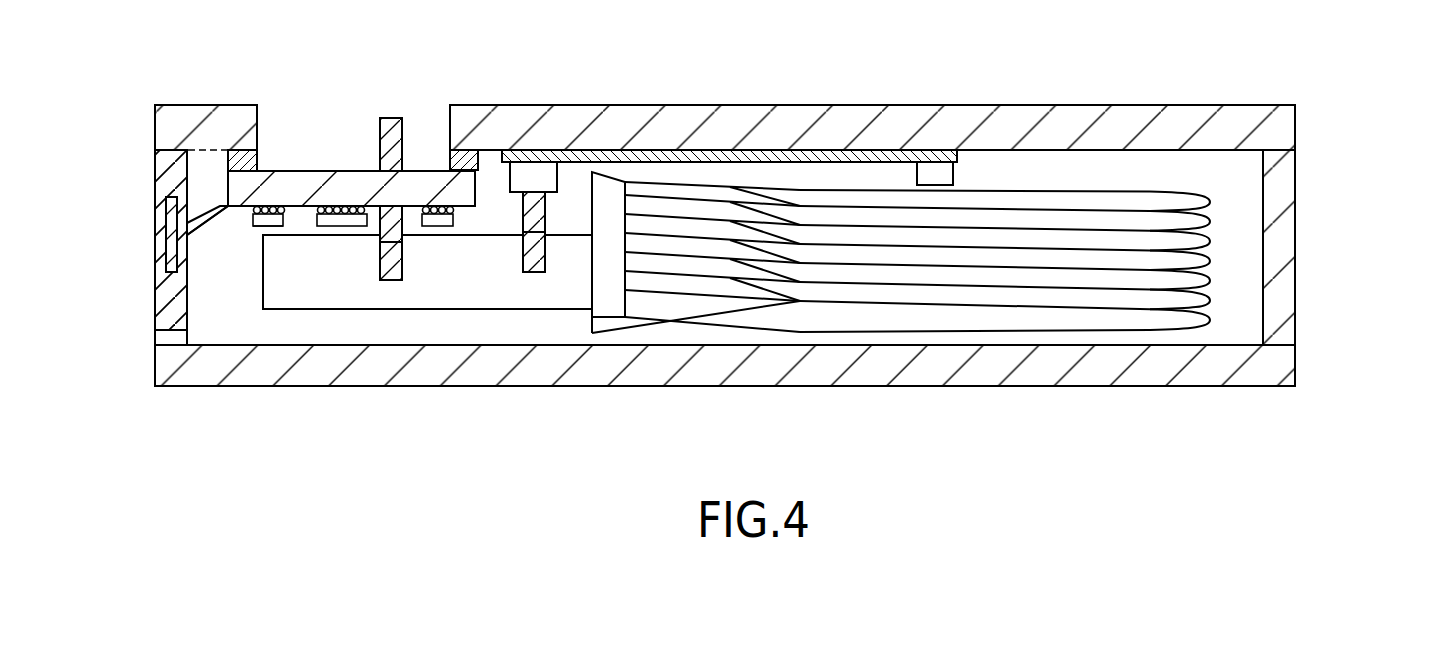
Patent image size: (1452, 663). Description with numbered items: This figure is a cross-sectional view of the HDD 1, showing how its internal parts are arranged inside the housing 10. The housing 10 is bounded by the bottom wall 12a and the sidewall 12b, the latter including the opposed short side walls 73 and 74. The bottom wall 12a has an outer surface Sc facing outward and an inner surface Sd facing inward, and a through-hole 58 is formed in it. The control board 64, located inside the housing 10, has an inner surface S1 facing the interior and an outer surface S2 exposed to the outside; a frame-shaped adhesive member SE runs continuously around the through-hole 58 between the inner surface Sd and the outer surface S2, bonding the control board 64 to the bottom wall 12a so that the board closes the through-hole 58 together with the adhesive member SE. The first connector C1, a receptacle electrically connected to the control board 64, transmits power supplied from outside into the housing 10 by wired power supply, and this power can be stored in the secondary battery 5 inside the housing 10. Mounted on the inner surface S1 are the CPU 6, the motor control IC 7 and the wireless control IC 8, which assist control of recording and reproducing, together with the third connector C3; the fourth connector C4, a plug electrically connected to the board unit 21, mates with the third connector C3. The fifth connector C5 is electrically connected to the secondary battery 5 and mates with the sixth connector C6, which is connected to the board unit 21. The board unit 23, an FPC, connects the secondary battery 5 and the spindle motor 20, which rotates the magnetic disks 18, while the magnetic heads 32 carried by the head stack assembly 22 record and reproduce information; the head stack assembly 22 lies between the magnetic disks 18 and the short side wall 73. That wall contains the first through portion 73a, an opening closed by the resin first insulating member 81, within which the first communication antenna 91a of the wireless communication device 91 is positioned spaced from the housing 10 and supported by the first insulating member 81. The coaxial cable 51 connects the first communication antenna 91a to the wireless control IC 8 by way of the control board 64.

The HDD 1 is at (1313, 67).
The housing 10 is at (1302, 350).
The bottom wall 12a is at (1295, 127).
The sidewall 12b is at (1299, 300).
The short side wall 74 is at (1295, 250).
The short side wall 73 is at (165, 336).
The first through portion 73a is at (158, 172).
The first insulating member 81 is at (165, 290).
The outer surface Sc is at (1150, 105).
The inner surface Sd is at (1133, 152).
The through-hole 58 is at (450, 126).
The adhesive member SE is at (207, 207).
The coaxial cable 51 is at (211, 224).
The control board 64 is at (325, 172).
The outer surface S2 is at (275, 171).
The inner surface S1 is at (302, 208).
The first connector C1 is at (395, 118).
The third connector C3 is at (380, 226).
The fourth connector C4 is at (402, 258).
The fifth connector C5 is at (523, 220).
The sixth connector C6 is at (548, 256).
The CPU 6 is at (340, 216).
The motor control IC 7 is at (438, 227).
The board unit 21 is at (338, 310).
The secondary battery 5 is at (538, 182).
The board unit 23 is at (893, 158).
The spindle motor 20 is at (957, 165).
The head stack assembly 22 is at (676, 194).
The magnetic heads 32 is at (810, 201).
The magnetic disks 18 is at (1213, 222).
The wireless communication device 91 is at (286, 450).
The first communication antenna 91a is at (176, 260).
The wireless control IC 8 is at (256, 226).